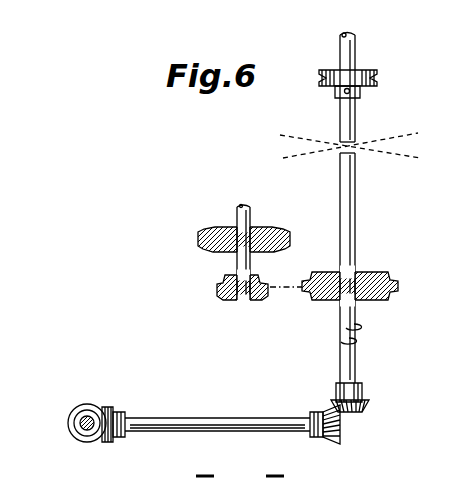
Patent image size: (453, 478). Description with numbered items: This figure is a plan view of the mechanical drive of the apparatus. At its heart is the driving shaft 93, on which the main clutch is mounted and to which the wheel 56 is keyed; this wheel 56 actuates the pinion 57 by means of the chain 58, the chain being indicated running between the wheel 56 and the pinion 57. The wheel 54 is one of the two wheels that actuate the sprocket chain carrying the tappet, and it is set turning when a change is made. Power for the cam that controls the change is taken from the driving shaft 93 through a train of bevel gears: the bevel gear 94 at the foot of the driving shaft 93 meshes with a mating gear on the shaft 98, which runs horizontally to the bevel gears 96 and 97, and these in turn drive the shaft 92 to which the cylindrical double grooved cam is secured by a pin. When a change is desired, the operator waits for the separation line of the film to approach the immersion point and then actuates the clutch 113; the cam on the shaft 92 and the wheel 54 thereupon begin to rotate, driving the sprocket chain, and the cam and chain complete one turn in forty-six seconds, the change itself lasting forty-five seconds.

The wheel 54 is at (270, 234).
The wheel 56 is at (376, 279).
The pinion 57 is at (228, 279).
The chain 58 is at (289, 282).
The shaft 92 is at (90, 414).
The driving shaft 93 is at (355, 242).
The bevel gear 94 is at (373, 400).
The bevel gear 96 is at (117, 413).
The bevel gear 97 is at (73, 438).
The shaft 98 is at (210, 416).
The clutch 113 is at (385, 137).